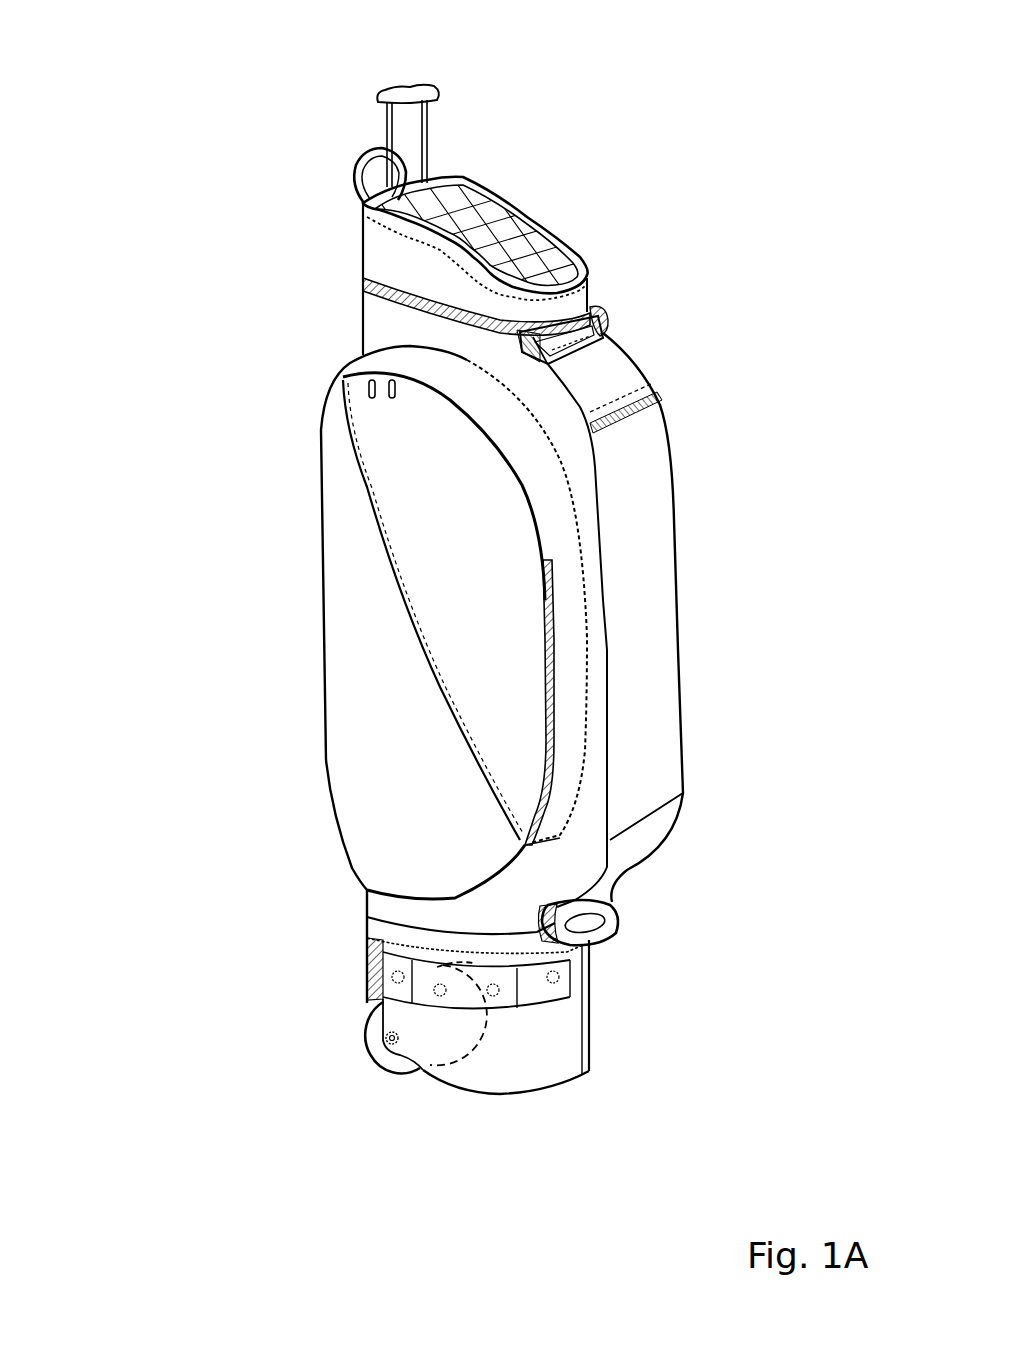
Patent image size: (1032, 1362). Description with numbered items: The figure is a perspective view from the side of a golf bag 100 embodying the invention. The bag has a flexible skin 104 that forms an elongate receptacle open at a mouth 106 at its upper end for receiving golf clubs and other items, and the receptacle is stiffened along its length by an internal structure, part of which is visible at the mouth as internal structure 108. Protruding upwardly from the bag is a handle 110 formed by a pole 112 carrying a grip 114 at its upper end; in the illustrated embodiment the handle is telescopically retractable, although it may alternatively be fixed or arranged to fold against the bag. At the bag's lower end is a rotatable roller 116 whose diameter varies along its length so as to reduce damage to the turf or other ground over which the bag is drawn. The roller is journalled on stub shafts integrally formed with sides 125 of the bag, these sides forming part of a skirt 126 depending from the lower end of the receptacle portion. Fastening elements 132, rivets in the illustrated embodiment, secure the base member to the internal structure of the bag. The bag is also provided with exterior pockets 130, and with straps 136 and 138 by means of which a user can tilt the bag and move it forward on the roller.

The golf bag 100 is at (212, 196).
The flexible skin 104 is at (662, 466).
The mouth 106 is at (573, 240).
The internal structure 108 is at (473, 210).
The handle 110 is at (458, 73).
The pole 112 is at (385, 140).
The grip 114 is at (395, 90).
The rotatable roller 116 is at (372, 1060).
The sides 125 is at (404, 1043).
The skirt 126 is at (560, 1028).
The exterior pockets 130 is at (410, 563).
The fastening elements 132 is at (560, 978).
The strap 136 is at (362, 152).
The strap 138 is at (607, 330).